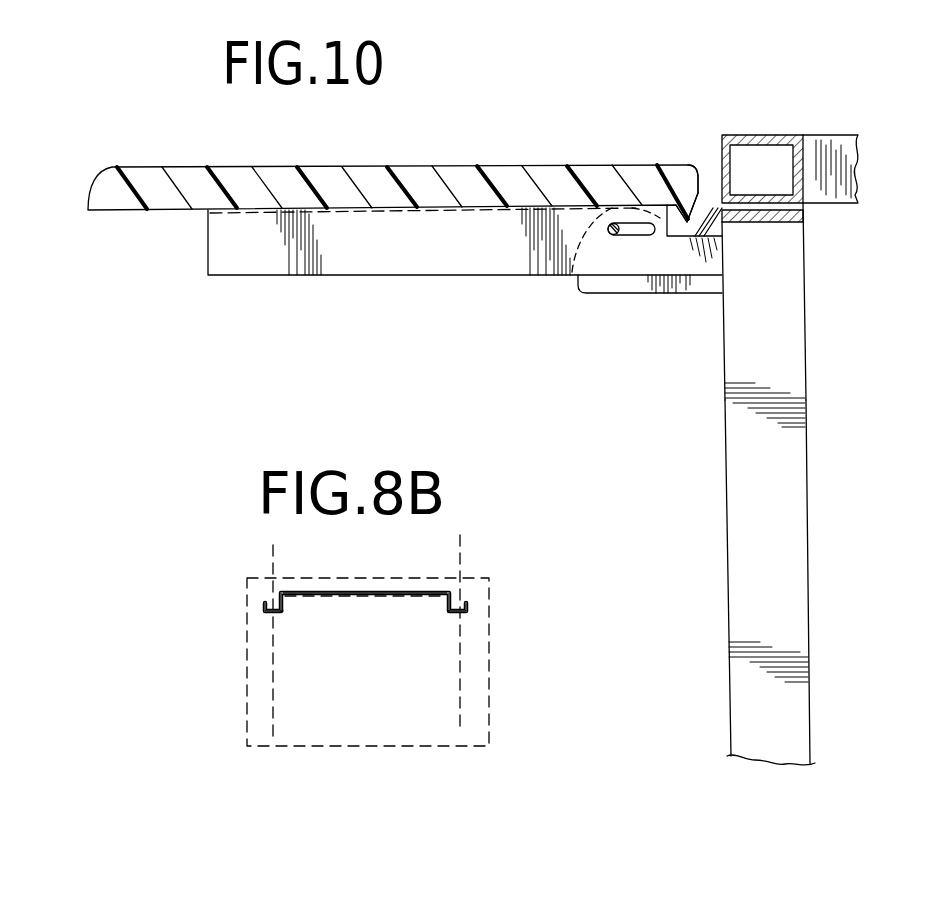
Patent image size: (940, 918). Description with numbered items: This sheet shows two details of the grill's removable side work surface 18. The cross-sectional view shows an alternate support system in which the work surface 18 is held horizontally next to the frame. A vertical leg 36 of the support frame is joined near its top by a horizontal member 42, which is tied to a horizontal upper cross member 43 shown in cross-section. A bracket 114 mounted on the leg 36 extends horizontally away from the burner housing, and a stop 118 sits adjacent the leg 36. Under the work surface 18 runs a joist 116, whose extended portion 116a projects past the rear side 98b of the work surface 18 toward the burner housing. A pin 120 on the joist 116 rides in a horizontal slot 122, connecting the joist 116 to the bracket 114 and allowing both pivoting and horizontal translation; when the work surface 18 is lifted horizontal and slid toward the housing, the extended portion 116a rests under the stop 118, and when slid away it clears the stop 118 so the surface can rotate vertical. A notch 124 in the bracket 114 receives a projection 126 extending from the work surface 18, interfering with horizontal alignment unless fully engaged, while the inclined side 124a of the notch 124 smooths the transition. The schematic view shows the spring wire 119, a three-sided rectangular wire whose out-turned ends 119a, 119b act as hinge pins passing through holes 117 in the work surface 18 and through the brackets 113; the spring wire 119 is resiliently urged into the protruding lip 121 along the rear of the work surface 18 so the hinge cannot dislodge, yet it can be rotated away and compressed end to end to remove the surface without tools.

In FIG. 10, the work surface 18 is at (468, 178).
In FIG. 8B, the work surface 18 is at (494, 666).
In FIG. 10, the joist 116 is at (247, 248).
In FIG. 10, the bracket 114 is at (622, 278).
In FIG. 10, the pin 120 is at (607, 231).
In FIG. 10, the horizontal slot 122 is at (642, 232).
In FIG. 10, the extended portion of joist 116a is at (725, 250).
In FIG. 10, the notch 124 is at (700, 238).
In FIG. 10, the inclined side of notch 124a is at (683, 235).
In FIG. 10, the projection 126 is at (687, 222).
In FIG. 10, the rear side of work surface 98b is at (683, 177).
In FIG. 10, the horizontal upper cross member 43 is at (747, 135).
In FIG. 10, the horizontal member 42 is at (833, 146).
In FIG. 10, the stop 118 is at (803, 240).
In FIG. 10, the vertical leg 36 is at (788, 507).
In FIG. 8B, the bracket 113 is at (275, 577).
In FIG. 8B, the spring wire 119 is at (433, 588).
In FIG. 8B, the out-turned end of spring wire 119a is at (466, 602).
In FIG. 8B, the out-turned end of spring wire 119b is at (264, 604).
In FIG. 8B, the hole 117 is at (265, 614).
In FIG. 8B, the protruding lip 121 is at (319, 599).